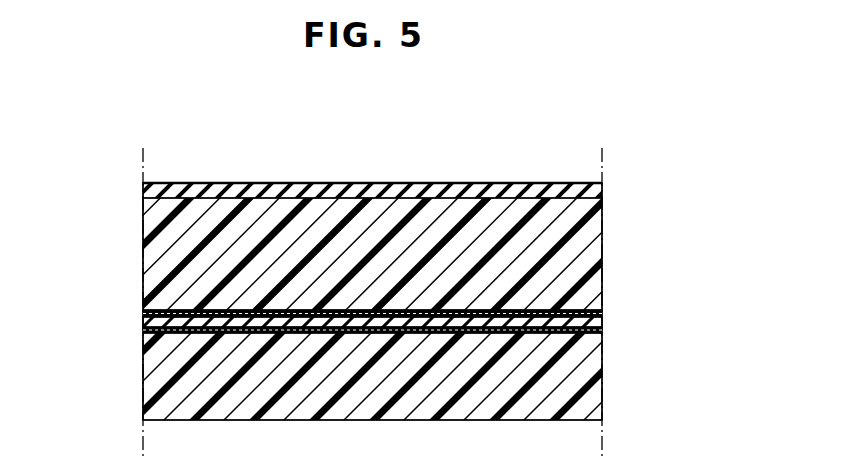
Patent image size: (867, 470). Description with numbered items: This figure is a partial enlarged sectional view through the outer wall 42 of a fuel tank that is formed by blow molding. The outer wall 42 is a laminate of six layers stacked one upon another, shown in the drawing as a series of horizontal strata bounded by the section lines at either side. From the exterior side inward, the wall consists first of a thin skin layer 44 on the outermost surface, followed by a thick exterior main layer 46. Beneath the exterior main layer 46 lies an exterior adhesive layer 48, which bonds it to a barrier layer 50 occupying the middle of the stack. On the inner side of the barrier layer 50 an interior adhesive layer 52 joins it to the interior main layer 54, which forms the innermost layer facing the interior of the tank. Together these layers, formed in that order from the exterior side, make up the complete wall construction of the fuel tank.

The outer wall 42 is at (233, 160).
The skin layer 44 is at (590, 190).
The exterior main layer 46 is at (585, 237).
The exterior adhesive layer 48 is at (597, 297).
The barrier layer 50 is at (595, 320).
The interior adhesive layer 52 is at (588, 337).
The interior main layer 54 is at (590, 392).